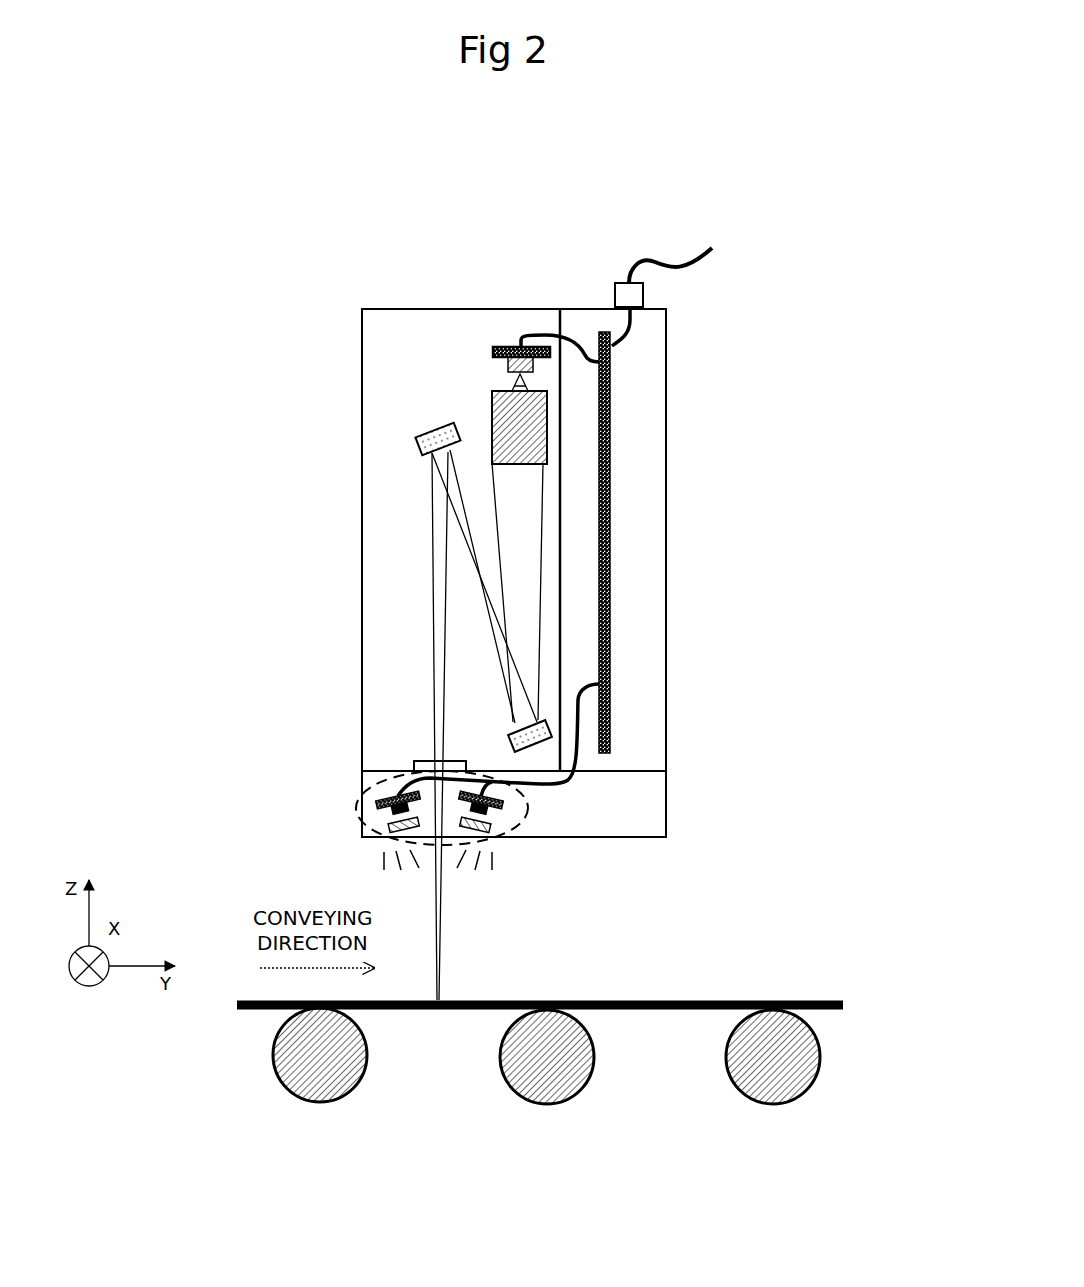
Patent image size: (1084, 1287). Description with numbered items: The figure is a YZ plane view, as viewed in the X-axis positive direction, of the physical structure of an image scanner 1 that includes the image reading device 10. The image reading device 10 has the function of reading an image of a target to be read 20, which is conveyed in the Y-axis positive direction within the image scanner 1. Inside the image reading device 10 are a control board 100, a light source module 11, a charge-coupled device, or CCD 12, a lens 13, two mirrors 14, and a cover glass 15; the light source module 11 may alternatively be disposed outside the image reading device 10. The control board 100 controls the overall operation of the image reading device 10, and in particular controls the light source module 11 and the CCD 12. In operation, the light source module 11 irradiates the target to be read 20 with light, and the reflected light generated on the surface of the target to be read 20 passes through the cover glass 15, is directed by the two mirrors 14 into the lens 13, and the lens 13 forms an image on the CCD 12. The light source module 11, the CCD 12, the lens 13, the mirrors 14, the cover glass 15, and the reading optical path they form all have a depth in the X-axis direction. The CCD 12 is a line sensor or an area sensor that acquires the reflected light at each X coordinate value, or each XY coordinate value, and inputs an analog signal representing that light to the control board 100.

The image scanner 1 is at (613, 175).
The image reading device 10 is at (666, 327).
The control board 100 is at (612, 415).
The light source module 11 is at (347, 799).
The charge-coupled device (CCD) 12 is at (505, 347).
The lens 13 is at (492, 395).
The mirrors 14 is at (418, 432).
The cover glass 15 is at (414, 761).
The target to be read 20 is at (797, 1000).